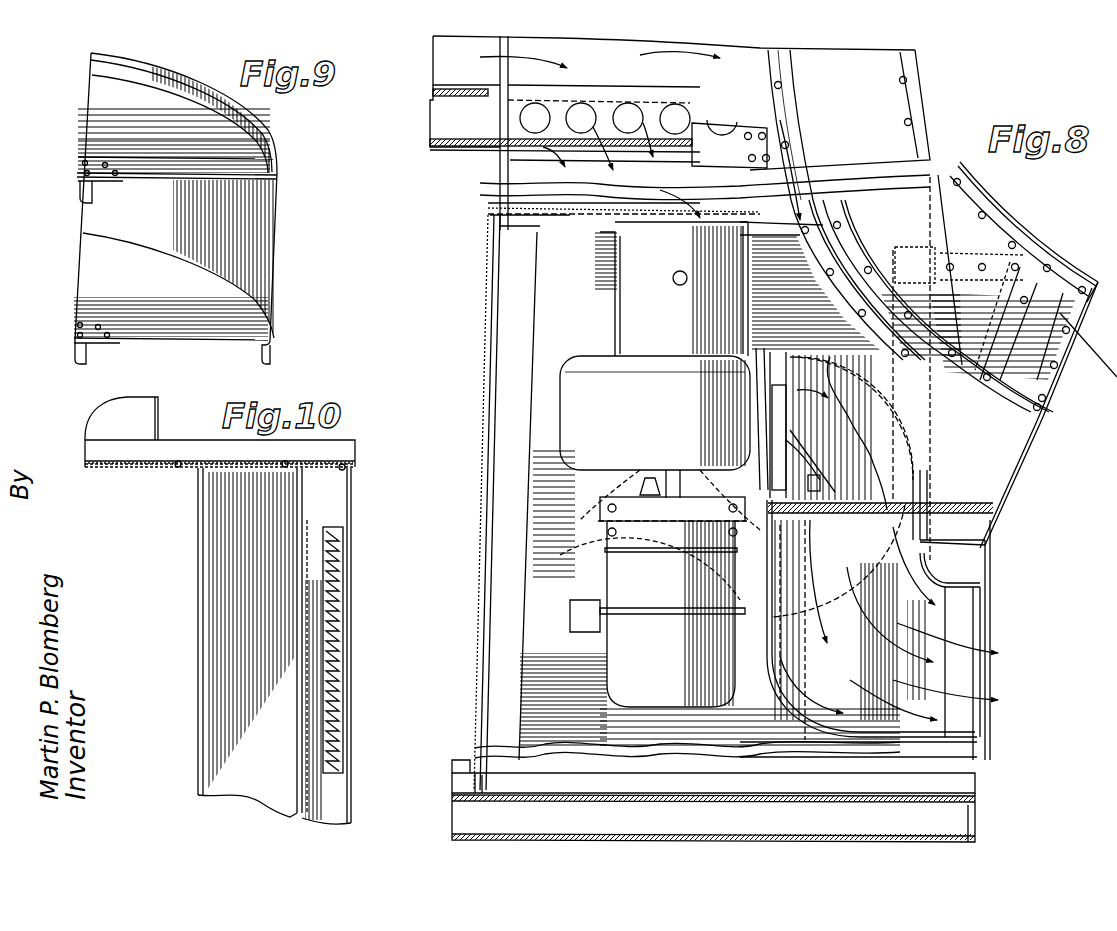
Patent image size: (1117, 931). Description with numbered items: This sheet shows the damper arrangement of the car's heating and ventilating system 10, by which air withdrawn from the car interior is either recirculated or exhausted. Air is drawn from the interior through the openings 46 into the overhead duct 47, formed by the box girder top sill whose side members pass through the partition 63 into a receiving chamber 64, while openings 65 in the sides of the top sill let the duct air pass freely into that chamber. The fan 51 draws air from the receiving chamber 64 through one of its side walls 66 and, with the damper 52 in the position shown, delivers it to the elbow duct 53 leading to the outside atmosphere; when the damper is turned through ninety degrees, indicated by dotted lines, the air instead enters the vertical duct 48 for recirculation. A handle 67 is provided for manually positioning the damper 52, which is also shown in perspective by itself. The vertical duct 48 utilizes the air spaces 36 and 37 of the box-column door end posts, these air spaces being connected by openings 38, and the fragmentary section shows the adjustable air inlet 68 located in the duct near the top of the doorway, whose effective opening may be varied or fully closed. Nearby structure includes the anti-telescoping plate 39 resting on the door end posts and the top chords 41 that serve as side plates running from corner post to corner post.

In FIG. 8, the air conditioning unit 10 is at (812, 290).
In FIG. 10, the air space 36 is at (238, 584).
In FIG. 8, the air space 36 is at (997, 290).
In FIG. 10, the air space 37 is at (310, 797).
In FIG. 8, the air space 37 is at (1060, 297).
In FIG. 10, the openings 38 is at (300, 541).
In FIG. 10, the anti-telescoping plate 39 is at (95, 465).
In FIG. 8, the anti-telescoping plate 39 is at (702, 420).
In FIG. 8, the top chords 41 is at (512, 816).
In FIG. 8, the openings 46 is at (448, 96).
In FIG. 8, the overhead duct 47 is at (450, 55).
In FIG. 10, the vertical duct 48 is at (222, 666).
In FIG. 8, the vertical duct 48 is at (1000, 441).
In FIG. 8, the fan 51 is at (614, 398).
In FIG. 9, the damper 52 is at (137, 222).
In FIG. 8, the damper 52 is at (860, 382).
In FIG. 8, the elbow duct 53 is at (823, 687).
In FIG. 8, the partition 63 is at (486, 212).
In FIG. 8, the receiving chamber 64 is at (510, 181).
In FIG. 8, the openings 65 is at (673, 118).
In FIG. 8, the side wall 66 is at (545, 238).
In FIG. 8, the handle 67 is at (790, 422).
In FIG. 10, the air inlet 68 is at (353, 603).